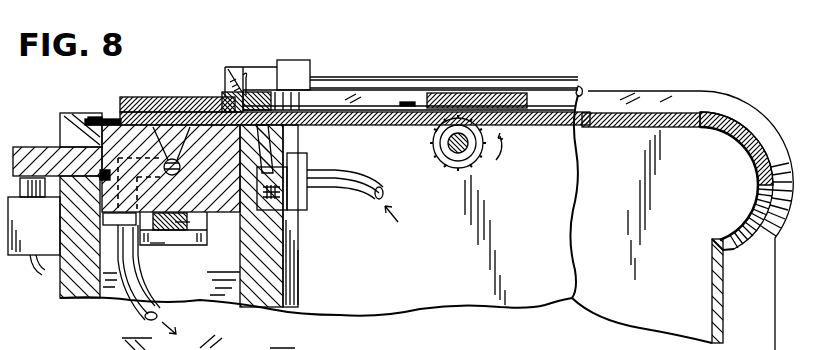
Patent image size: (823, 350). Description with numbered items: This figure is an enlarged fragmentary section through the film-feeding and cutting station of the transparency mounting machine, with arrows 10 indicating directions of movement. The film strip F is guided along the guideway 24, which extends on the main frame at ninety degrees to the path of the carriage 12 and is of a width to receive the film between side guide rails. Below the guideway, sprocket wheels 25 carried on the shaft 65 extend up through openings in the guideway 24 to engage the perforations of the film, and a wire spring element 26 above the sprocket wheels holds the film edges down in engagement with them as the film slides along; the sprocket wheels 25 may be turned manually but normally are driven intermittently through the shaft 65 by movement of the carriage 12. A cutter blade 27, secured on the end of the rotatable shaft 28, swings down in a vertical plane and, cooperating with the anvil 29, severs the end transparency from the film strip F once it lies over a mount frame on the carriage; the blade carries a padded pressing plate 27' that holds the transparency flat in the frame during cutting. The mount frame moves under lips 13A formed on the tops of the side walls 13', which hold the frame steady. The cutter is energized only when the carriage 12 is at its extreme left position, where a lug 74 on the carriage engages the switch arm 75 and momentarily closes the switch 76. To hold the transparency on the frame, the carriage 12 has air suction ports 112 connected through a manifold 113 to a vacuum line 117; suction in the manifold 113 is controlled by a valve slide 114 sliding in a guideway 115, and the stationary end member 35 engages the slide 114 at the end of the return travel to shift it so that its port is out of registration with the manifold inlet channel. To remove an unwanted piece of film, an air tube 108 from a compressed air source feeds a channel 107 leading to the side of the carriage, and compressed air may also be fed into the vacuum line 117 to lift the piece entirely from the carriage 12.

The direction of travel 10 is at (80, 120).
The lips 13A is at (100, 112).
The film strip F is at (118, 124).
The padded pressing plate 27' is at (177, 88).
The cutter blade 27 is at (255, 76).
The rotatable shaft 28 is at (390, 88).
The wire spring element 26 is at (500, 100).
The guideway 24 is at (612, 120).
The lug 74 is at (55, 162).
The switch arm 75 is at (30, 185).
The switch 76 is at (34, 236).
The side walls 13' is at (168, 229).
The carriage 12 is at (203, 193).
The air suction ports 112 is at (176, 120).
The manifold 113 is at (193, 223).
The guideway 115 is at (157, 243).
The valve slide 114 is at (182, 222).
The end member 35 is at (207, 270).
The vacuum line 117 is at (140, 300).
The anvil 29 is at (286, 149).
The channel 107 is at (275, 150).
The air tube 108 is at (357, 198).
The sprocket wheels 25 is at (432, 158).
The shaft 65 is at (448, 145).